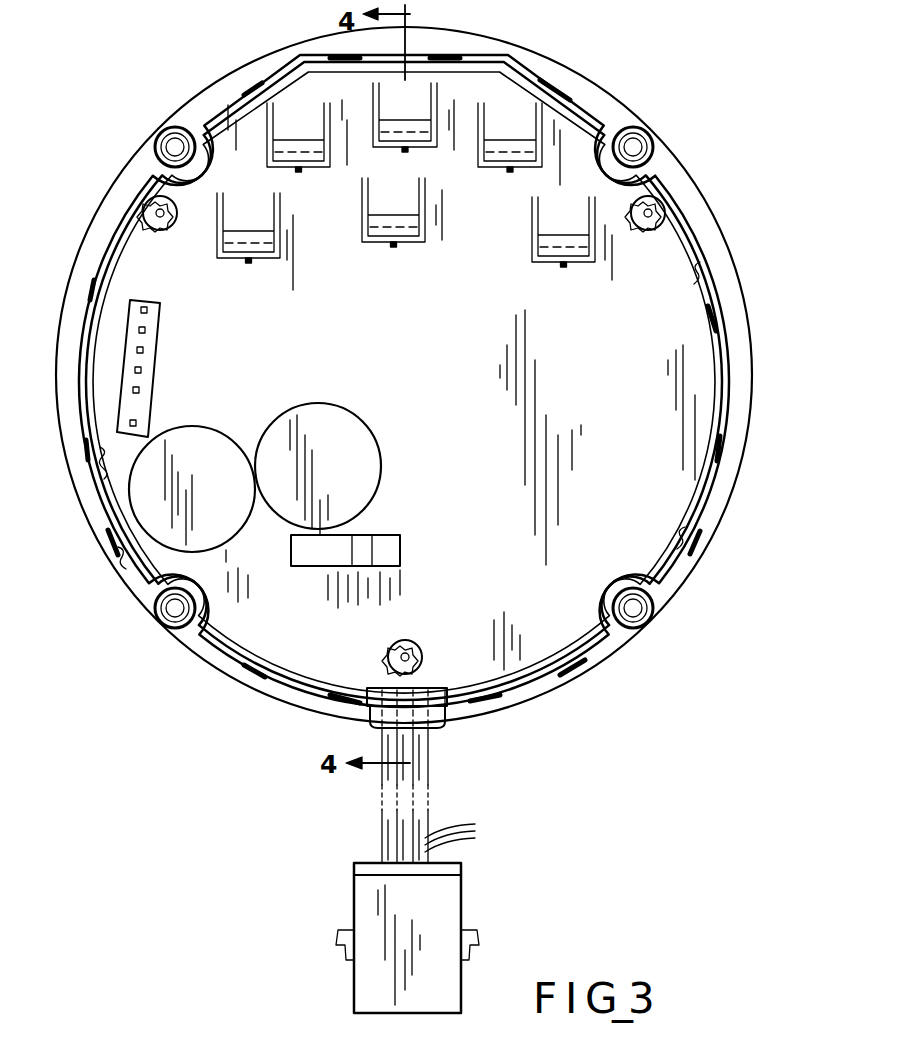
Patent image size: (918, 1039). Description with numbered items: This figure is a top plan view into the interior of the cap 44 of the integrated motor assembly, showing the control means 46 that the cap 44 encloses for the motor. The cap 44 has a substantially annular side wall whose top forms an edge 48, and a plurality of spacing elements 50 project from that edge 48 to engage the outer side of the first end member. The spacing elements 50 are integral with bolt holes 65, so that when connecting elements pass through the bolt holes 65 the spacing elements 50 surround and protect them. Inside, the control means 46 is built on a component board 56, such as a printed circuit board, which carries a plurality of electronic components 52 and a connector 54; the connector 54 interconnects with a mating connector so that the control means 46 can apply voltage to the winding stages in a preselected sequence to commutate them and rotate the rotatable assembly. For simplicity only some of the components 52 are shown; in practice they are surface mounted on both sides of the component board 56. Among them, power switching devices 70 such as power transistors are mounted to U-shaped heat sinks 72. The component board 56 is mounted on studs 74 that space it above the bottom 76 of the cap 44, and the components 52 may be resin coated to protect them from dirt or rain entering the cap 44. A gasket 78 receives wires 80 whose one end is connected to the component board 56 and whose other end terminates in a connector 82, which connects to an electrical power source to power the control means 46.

The cap 44 is at (433, 375).
The control means 46 is at (300, 632).
The edge 48 is at (738, 332).
The spacing elements 50 is at (152, 147).
The electronic components 52 is at (200, 427).
The connector 54 is at (150, 340).
The component board 56 is at (680, 458).
The bolt holes 65 is at (175, 140).
The power switching devices 70 is at (298, 140).
The U-shaped heat sinks 72 is at (300, 173).
The studs 74 is at (160, 213).
The bottom 76 is at (720, 385).
The gasket 78 is at (445, 722).
The wires 80 is at (448, 795).
The connector 82 is at (375, 985).